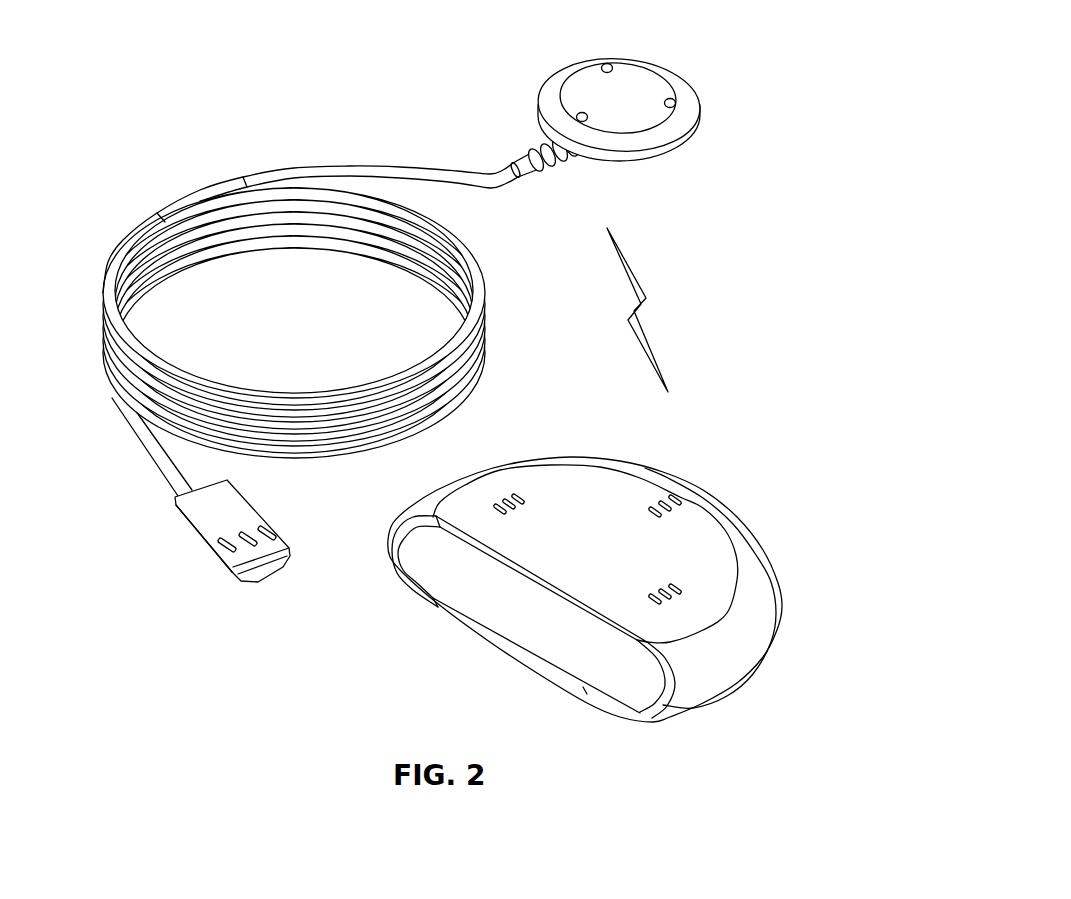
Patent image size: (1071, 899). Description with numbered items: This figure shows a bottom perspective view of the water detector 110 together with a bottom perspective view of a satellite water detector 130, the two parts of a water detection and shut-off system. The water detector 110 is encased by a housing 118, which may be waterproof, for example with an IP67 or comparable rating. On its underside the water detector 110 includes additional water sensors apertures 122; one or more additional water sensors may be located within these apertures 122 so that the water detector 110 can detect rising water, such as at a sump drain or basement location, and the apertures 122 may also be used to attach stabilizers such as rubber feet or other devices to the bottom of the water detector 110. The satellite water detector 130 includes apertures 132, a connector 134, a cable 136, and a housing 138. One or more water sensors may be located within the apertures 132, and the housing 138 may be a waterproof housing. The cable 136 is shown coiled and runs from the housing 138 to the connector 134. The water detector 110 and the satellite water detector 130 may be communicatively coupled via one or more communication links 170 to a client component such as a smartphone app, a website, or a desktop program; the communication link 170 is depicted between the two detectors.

The water detector 110 is at (561, 589).
The housing 118 is at (388, 542).
The additional water sensors apertures 122 is at (527, 500).
The satellite water detector 130 is at (652, 92).
The apertures 132 is at (675, 102).
The connector 134 is at (207, 547).
The cable 136 is at (117, 250).
The housing 138 is at (685, 112).
The communication links 170 is at (650, 327).